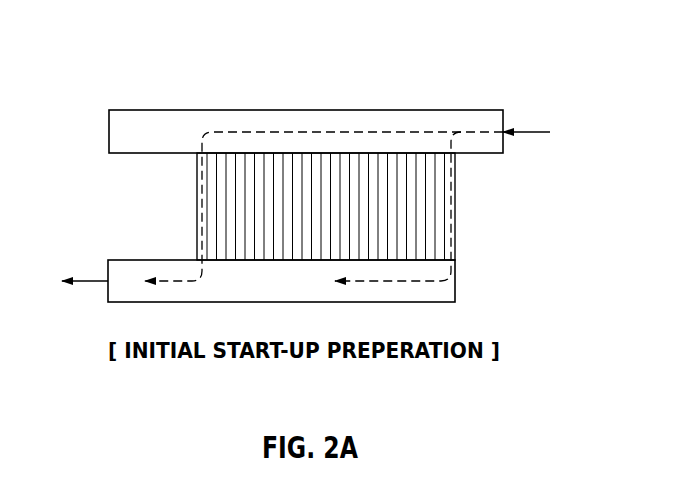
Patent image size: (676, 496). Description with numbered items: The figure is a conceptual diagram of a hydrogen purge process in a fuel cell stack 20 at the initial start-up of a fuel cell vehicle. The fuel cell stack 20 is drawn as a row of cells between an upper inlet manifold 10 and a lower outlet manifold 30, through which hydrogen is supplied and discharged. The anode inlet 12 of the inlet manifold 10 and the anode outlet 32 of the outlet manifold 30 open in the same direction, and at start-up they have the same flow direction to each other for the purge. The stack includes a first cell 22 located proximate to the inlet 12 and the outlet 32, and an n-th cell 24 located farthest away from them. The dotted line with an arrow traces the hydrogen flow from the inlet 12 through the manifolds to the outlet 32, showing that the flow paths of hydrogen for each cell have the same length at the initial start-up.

The inlet manifold 10 is at (262, 108).
The anode inlet 12 is at (503, 117).
The fuel cell stack 20 is at (456, 233).
The first cell 22 is at (197, 222).
The n-th cell 24 is at (455, 195).
The outlet manifold 30 is at (457, 291).
The anode outlet 32 is at (108, 268).